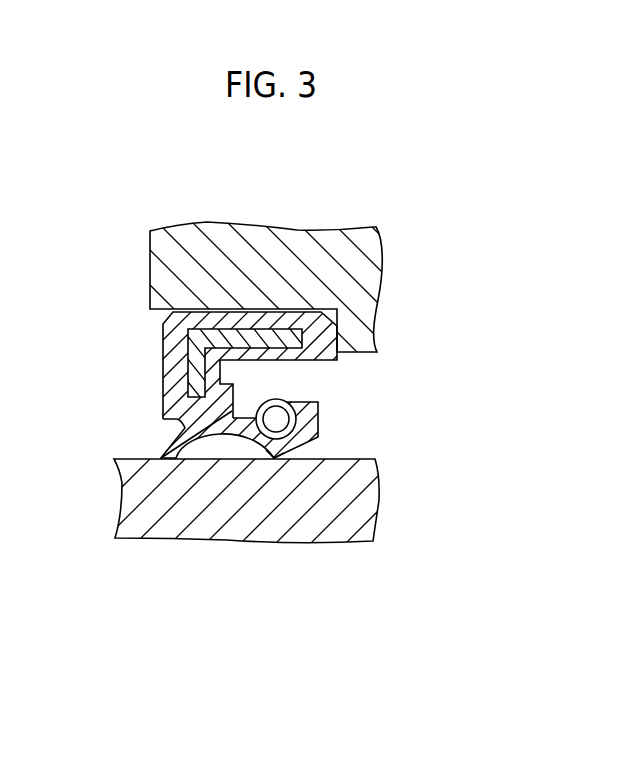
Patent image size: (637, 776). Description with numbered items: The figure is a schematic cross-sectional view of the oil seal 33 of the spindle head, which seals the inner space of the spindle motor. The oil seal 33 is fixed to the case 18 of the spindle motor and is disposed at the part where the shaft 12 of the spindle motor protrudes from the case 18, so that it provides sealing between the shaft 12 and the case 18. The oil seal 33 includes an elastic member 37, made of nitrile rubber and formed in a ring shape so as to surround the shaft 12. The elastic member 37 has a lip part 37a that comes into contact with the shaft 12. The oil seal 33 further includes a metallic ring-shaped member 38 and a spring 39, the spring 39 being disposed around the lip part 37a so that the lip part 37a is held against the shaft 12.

The shaft 12 is at (357, 495).
The case 18 is at (350, 267).
The oil seal 33 is at (162, 348).
The elastic member 37 is at (170, 388).
The lip part 37a is at (277, 447).
The metallic ring-shaped member 38 is at (273, 340).
The spring 39 is at (275, 400).